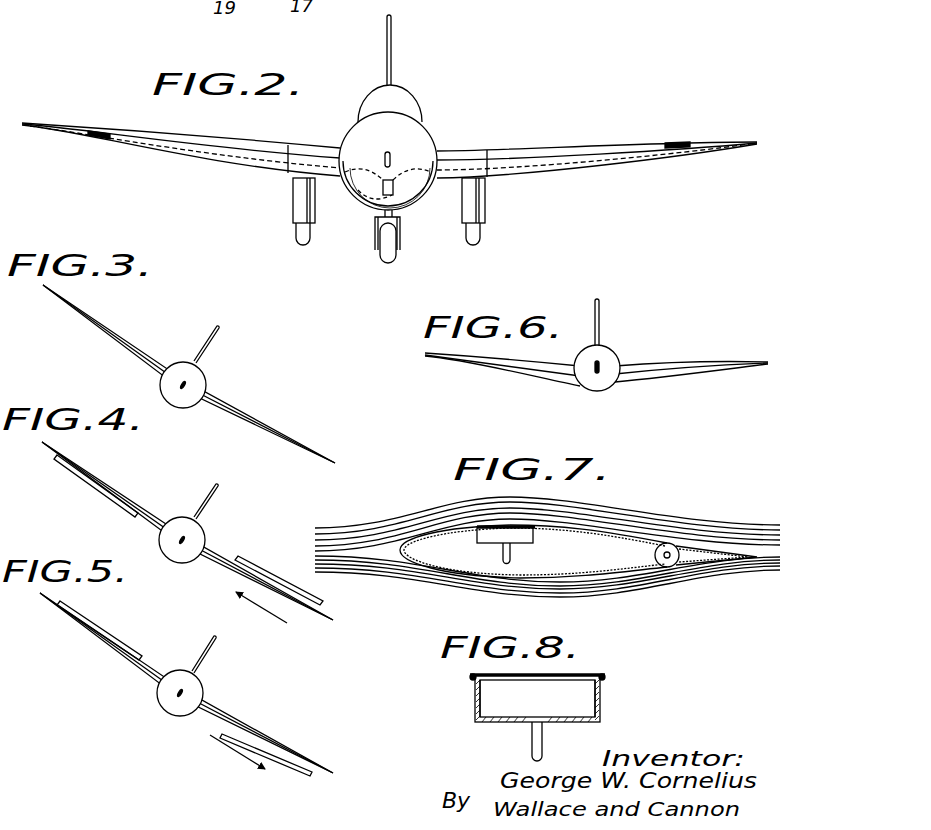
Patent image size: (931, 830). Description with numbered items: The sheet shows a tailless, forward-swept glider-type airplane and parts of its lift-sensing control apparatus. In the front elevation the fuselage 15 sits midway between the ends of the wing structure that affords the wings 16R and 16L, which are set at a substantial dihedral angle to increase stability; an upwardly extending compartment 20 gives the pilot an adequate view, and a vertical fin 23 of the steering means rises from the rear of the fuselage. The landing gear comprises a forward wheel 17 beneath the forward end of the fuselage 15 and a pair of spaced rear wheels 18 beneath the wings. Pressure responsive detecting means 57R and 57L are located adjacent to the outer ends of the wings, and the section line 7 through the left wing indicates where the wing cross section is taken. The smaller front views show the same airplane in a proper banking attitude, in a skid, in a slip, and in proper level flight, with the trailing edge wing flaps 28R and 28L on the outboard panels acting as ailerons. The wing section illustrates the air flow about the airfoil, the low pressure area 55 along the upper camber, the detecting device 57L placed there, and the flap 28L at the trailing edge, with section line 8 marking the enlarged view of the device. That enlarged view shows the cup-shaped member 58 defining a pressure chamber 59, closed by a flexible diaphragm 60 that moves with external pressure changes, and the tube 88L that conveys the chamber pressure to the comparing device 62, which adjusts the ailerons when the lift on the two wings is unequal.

In FIG. 2, the fuselage 15 is at (423, 199).
In FIG. 2, the right wing 16R is at (200, 113).
In FIG. 3, the right wing 16R is at (139, 353).
In FIG. 4, the right wing 16R is at (142, 515).
In FIG. 5, the right wing 16R is at (150, 670).
In FIG. 6, the right wing 16R is at (536, 367).
In FIG. 2, the left wing 16L is at (568, 150).
In FIG. 3, the left wing 16L is at (243, 418).
In FIG. 4, the left wing 16L is at (216, 560).
In FIG. 5, the left wing 16L is at (215, 713).
In FIG. 6, the left wing 16L is at (677, 374).
In FIG. 7, the left wing 16L is at (622, 575).
In FIG. 2, the forward wheel 17 is at (388, 263).
In FIG. 2, the rear wheels 18 is at (302, 241).
In FIG. 2, the compartment 20 is at (417, 102).
In FIG. 2, the vertical fin 23 is at (392, 61).
In FIG. 4, the right trailing edge wing flap 28R is at (90, 489).
In FIG. 5, the right trailing edge wing flap 28R is at (100, 630).
In FIG. 4, the left trailing edge wing flap 28L is at (270, 573).
In FIG. 5, the left trailing edge wing flap 28L is at (292, 767).
In FIG. 7, the left trailing edge wing flap 28L is at (713, 558).
In FIG. 7, the low pressure area 55 is at (518, 522).
In FIG. 2, the right pressure responsive detecting device 57R is at (95, 131).
In FIG. 2, the left pressure responsive detecting device 57L is at (685, 143).
In FIG. 7, the left pressure responsive detecting device 57L is at (522, 535).
In FIG. 8, the left pressure responsive detecting device 57L is at (607, 694).
In FIG. 8, the cup-shaped member 58 is at (600, 711).
In FIG. 8, the pressure chamber 59 is at (492, 700).
In FIG. 8, the flexible diaphragm 60 is at (518, 687).
In FIG. 2, the comparing device 62 is at (378, 192).
In FIG. 8, the tube 88L is at (533, 738).
In FIG. 2, the section line 7— 7 is at (664, 110).
In FIG. 7, the section line 8— 8 is at (493, 487).